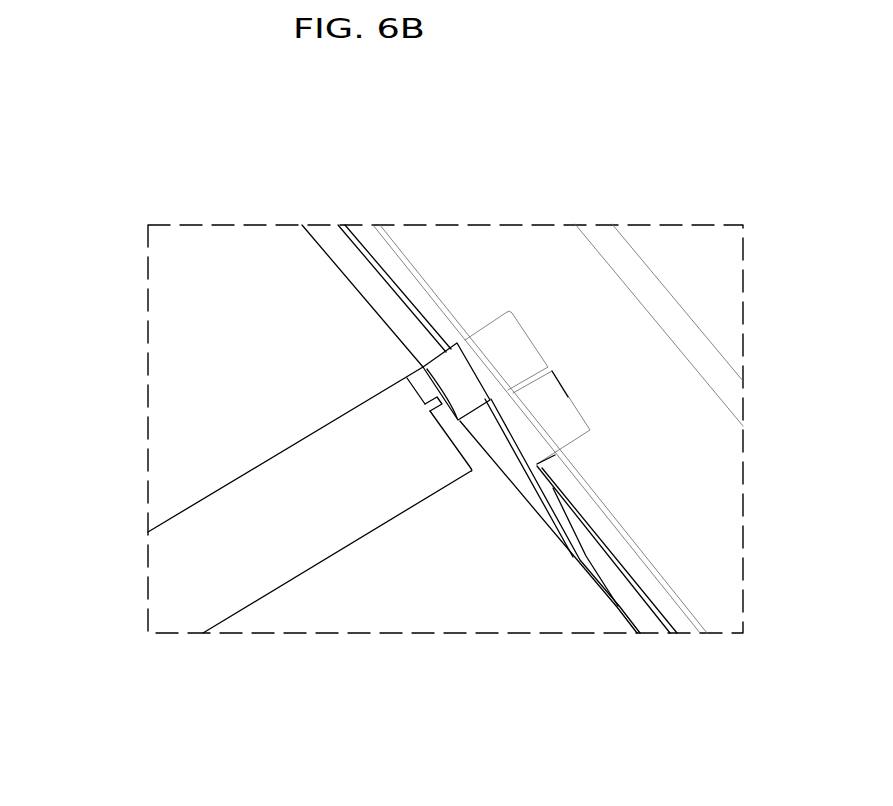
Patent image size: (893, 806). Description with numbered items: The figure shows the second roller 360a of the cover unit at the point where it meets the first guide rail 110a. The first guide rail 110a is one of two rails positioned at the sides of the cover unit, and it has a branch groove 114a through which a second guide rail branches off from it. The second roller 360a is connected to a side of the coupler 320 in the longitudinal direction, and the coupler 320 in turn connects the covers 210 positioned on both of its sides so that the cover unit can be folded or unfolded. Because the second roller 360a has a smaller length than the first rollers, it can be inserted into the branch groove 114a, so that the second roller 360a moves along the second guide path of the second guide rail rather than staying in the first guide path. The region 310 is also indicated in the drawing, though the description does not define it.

The first guide rail 110a is at (491, 232).
The branch groove 114a is at (562, 433).
The second roller 360a is at (457, 367).
The first display region 310 is at (202, 348).
The coupler 320 is at (140, 575).
The cover 210 is at (453, 597).